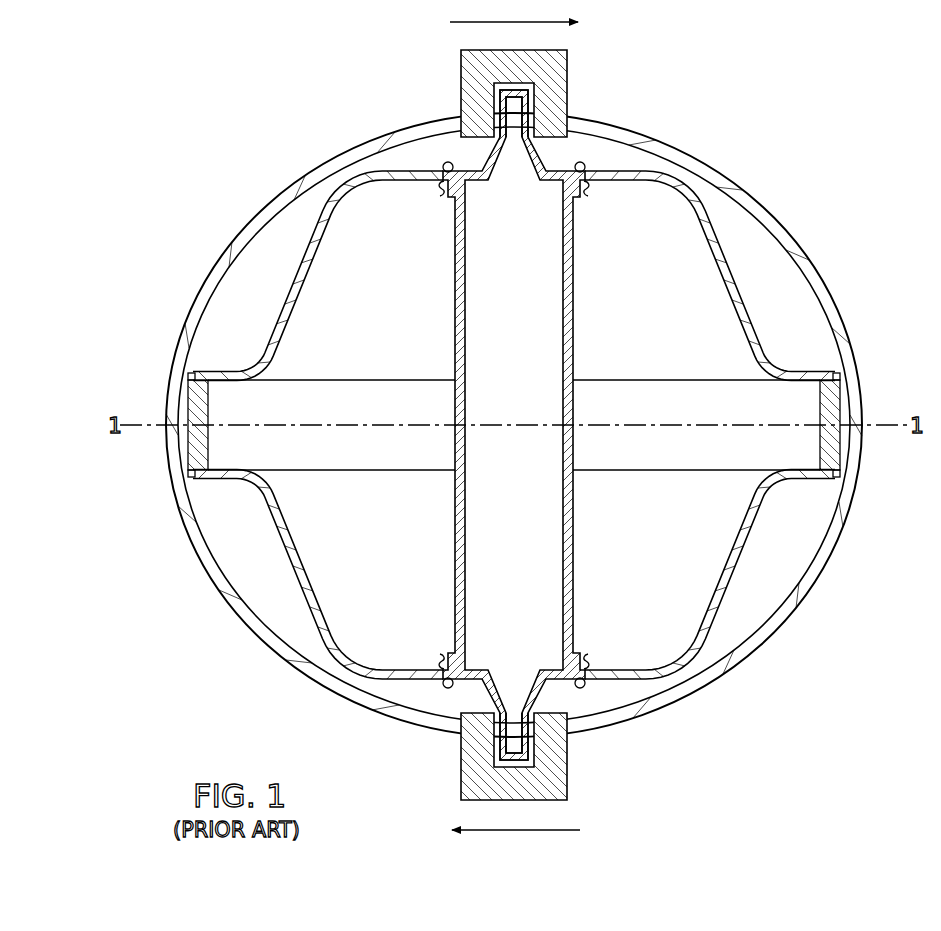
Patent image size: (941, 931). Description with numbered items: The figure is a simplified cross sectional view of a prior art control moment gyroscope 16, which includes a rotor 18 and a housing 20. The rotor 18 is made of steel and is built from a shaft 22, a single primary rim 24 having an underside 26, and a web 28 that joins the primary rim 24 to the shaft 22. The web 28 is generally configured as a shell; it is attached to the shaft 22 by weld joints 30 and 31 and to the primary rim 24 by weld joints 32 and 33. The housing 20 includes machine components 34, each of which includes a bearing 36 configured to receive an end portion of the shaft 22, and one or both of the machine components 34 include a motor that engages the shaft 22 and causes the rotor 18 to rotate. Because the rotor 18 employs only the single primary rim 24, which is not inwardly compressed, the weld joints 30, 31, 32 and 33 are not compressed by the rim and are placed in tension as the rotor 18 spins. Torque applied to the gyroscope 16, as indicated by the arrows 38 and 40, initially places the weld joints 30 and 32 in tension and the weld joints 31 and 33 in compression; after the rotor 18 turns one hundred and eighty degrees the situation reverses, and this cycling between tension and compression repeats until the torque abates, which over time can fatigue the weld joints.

The prior art control moment gyroscope 16 is at (784, 113).
The rotor 18 is at (514, 400).
The housing 20 is at (794, 240).
The shaft 22 is at (495, 424).
The primary rim 24 is at (186, 404).
The underside 26 is at (366, 380).
The web 28 is at (732, 270).
The weld joint 30 is at (445, 162).
The weld joint 31 is at (586, 162).
The weld joint 32 is at (187, 374).
The weld joint 33 is at (187, 477).
The machine component 34 is at (567, 58).
The bearing 36 is at (498, 89).
The arrow 38 is at (452, 25).
The arrow 40 is at (578, 830).